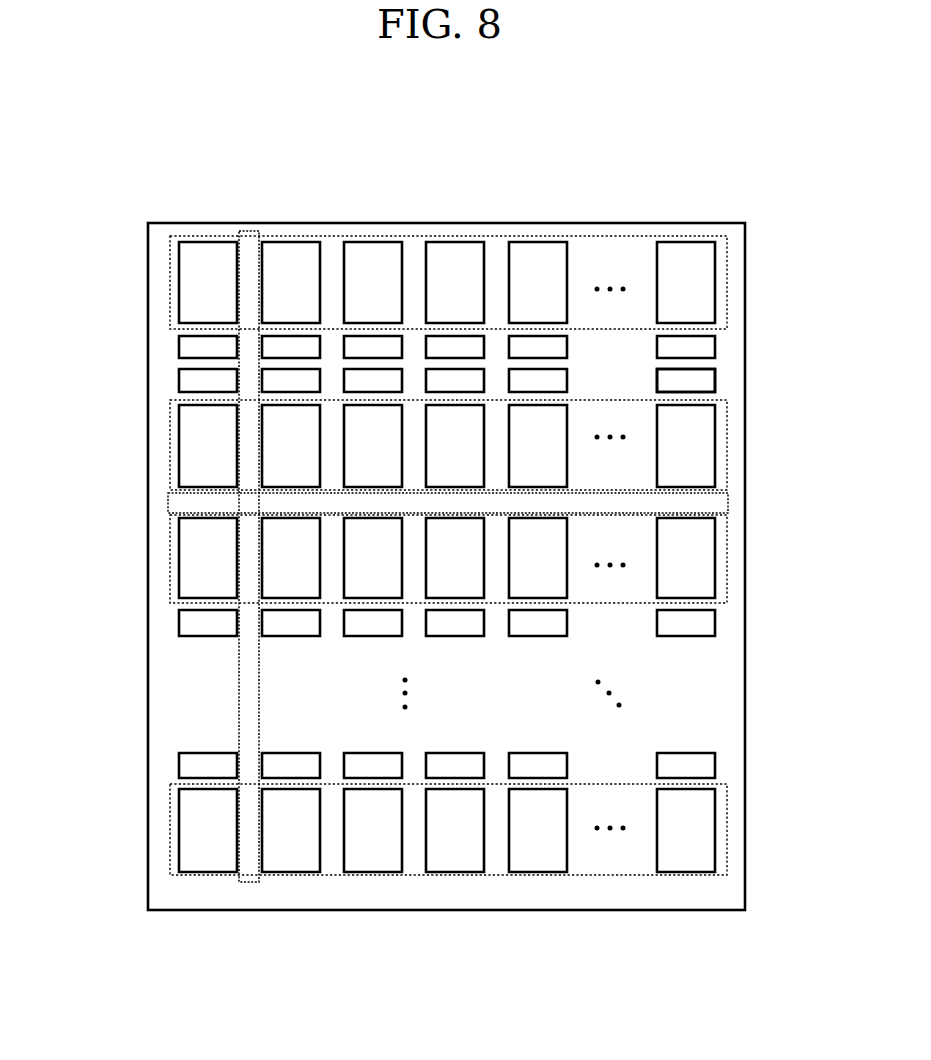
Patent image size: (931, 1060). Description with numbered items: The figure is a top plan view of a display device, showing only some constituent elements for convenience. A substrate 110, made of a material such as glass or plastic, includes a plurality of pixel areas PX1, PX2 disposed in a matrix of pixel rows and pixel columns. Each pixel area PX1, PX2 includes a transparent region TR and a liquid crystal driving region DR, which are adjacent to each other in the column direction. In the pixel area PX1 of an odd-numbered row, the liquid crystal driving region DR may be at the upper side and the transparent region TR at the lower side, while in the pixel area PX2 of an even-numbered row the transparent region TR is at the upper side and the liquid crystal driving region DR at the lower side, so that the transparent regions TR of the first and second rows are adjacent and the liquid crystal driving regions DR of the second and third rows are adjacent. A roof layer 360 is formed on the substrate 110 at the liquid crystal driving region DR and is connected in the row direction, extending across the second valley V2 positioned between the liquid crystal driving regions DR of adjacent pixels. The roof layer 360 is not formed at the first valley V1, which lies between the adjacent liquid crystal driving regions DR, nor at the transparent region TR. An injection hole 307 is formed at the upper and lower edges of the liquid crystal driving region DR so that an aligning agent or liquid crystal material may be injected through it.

The substrate 110 is at (745, 243).
The roof layer 360 is at (727, 297).
The injection hole 307 is at (695, 393).
The liquid crystal driving region DR is at (178, 292).
The transparent region TR is at (179, 347).
The pixel area of an odd-numbered row PX1 is at (92, 286).
The pixel area of an even-numbered row PX2 is at (92, 373).
The first valley V1 is at (168, 500).
The second valley V2 is at (245, 231).